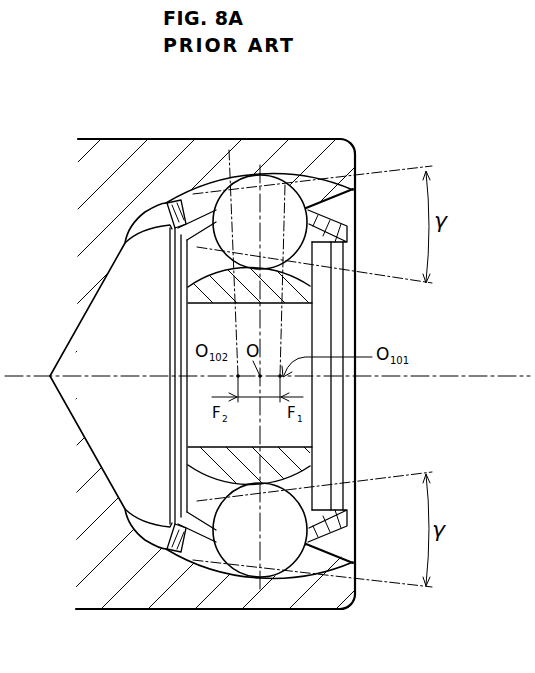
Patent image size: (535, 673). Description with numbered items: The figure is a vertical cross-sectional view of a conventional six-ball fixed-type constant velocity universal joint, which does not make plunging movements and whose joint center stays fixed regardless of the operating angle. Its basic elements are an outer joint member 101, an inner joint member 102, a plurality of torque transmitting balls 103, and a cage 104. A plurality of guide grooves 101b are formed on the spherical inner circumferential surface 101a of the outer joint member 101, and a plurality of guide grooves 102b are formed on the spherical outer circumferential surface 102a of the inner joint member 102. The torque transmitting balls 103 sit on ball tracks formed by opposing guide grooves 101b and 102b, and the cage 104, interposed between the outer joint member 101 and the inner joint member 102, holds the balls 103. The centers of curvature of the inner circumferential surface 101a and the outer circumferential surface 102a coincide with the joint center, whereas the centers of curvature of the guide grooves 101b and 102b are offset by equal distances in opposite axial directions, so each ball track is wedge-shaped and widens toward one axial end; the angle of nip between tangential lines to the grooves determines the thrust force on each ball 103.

The outer joint member 101 is at (124, 137).
The spherical inner circumferential surface 101a is at (166, 203).
The guide groove 101b is at (311, 177).
The inner joint member 102 is at (314, 437).
The spherical outer circumferential surface 102a is at (195, 548).
The guide groove 102b is at (170, 483).
The torque transmitting ball 103 is at (230, 187).
The cage 104 is at (343, 210).